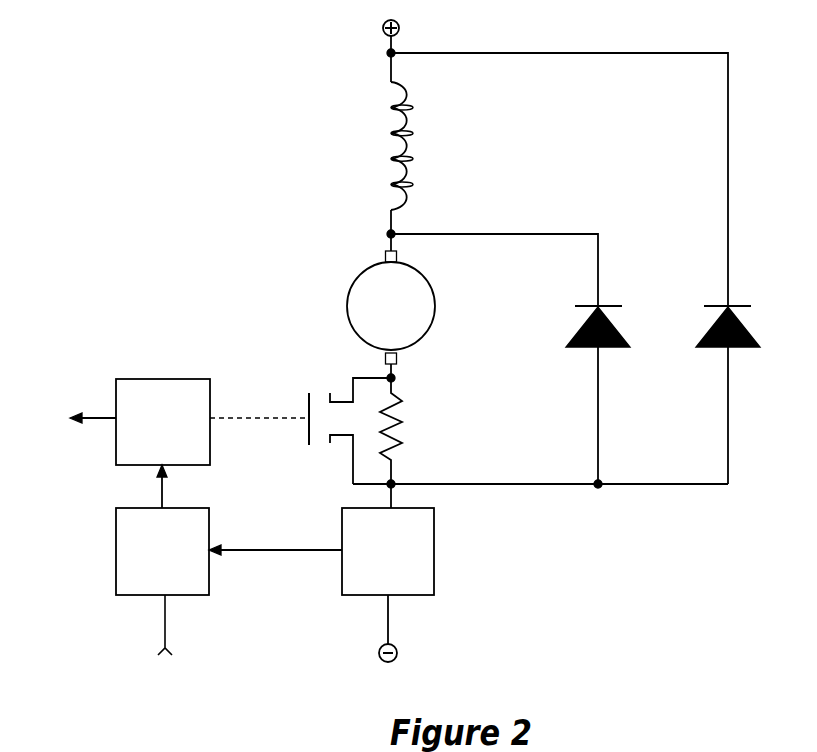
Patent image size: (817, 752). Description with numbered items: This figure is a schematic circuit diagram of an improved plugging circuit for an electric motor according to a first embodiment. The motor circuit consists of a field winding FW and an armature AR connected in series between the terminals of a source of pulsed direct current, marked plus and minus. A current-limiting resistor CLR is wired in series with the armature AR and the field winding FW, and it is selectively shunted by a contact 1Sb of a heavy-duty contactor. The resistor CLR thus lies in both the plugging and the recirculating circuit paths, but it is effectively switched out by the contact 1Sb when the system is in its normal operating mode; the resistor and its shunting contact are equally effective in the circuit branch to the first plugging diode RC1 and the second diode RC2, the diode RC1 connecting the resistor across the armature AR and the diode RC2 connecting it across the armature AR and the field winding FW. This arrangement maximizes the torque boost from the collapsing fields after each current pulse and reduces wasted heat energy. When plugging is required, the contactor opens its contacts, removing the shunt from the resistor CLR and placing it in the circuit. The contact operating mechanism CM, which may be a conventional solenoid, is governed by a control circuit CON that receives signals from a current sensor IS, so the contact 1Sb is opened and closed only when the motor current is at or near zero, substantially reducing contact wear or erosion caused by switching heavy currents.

The field winding FW is at (388, 155).
The armature AR is at (346, 312).
The contact 1Sb is at (307, 410).
The current-limiting resistor CLR is at (400, 418).
The first plugging diode RC1 is at (617, 330).
The second diode RC2 is at (754, 338).
The contact operating mechanism CM is at (185, 378).
The control circuit CON is at (210, 569).
The current sensor IS is at (435, 545).